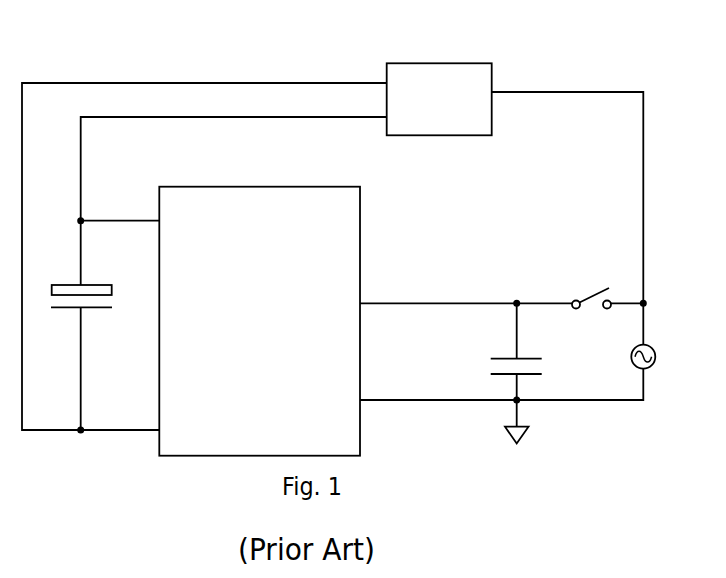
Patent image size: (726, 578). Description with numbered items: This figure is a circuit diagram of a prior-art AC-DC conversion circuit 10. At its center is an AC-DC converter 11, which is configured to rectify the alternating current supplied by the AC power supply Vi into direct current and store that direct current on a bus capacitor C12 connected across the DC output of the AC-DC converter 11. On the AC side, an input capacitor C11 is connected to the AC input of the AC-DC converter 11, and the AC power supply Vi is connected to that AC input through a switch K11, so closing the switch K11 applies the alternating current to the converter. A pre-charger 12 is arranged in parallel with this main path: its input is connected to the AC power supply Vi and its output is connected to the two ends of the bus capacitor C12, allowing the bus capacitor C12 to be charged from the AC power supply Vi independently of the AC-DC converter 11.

The AC-DC conversion circuit 10 is at (352, 226).
The AC-DC converter 11 is at (360, 258).
The pre-charger 12 is at (438, 62).
The input capacitor C11 is at (526, 351).
The bus capacitor C12 is at (96, 317).
The switch K11 is at (592, 290).
The AC power supply Vi is at (657, 356).